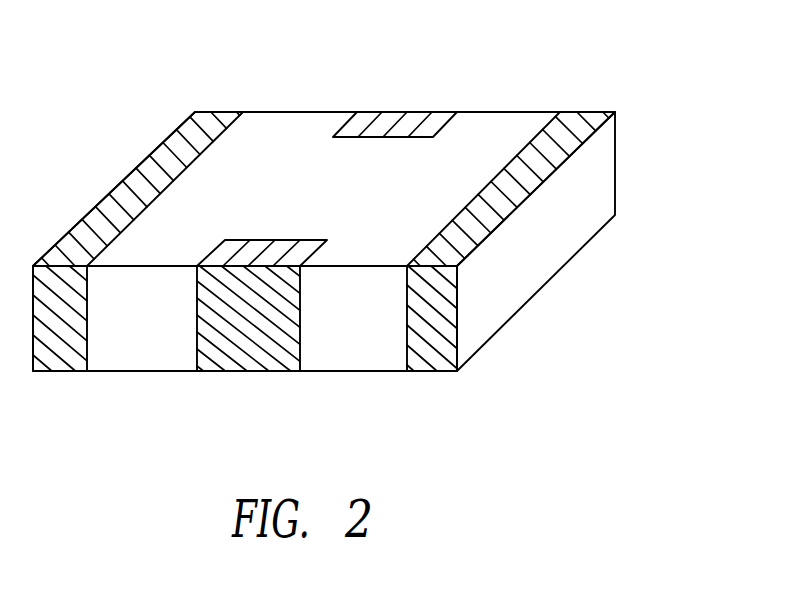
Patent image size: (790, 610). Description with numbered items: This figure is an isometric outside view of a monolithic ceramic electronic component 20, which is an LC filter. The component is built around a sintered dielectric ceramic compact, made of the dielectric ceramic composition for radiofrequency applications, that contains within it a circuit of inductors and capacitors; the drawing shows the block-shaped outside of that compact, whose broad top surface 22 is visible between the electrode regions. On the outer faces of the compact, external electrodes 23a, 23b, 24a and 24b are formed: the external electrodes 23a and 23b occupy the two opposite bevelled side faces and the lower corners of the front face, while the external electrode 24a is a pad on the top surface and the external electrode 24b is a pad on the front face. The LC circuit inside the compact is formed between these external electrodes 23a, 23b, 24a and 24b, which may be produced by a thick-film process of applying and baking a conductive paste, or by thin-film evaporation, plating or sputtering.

The monolithic ceramic electronic component 20 is at (585, 81).
The top surface of chip body 22 is at (268, 145).
The external electrode 23a is at (137, 182).
The external electrode 23b is at (520, 257).
The external electrode 24a is at (392, 120).
The external electrode 24b is at (260, 337).